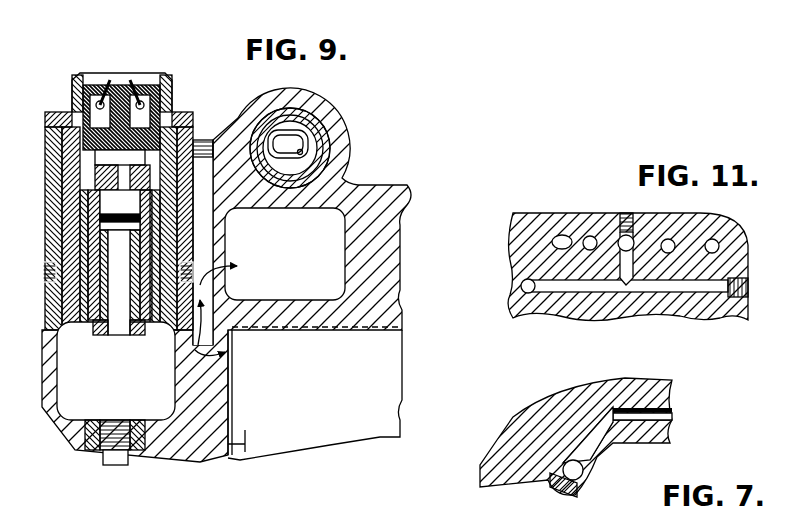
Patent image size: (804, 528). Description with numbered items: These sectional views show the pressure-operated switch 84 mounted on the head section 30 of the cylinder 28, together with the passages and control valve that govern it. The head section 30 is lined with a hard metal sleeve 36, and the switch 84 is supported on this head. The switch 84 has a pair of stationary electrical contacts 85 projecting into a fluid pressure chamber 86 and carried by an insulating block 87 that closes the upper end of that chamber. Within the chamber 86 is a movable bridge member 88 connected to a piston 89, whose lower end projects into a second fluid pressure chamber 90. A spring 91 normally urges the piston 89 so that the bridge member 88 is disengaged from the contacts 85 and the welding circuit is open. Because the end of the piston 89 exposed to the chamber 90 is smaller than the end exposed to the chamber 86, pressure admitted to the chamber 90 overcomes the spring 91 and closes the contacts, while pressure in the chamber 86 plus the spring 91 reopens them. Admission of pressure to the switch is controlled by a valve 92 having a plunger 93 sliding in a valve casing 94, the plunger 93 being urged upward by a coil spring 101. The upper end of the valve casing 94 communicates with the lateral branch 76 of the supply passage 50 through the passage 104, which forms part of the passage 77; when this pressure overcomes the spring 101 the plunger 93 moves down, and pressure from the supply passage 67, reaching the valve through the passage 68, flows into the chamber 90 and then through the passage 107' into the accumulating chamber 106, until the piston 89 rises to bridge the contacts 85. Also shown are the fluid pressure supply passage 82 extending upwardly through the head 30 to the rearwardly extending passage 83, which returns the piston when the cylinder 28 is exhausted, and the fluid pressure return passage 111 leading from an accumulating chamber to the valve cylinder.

In FIG. 9, the cylinder 28 is at (327, 396).
In FIG. 9, the head section 30 is at (190, 458).
In FIG. 9, the hard metal sleeve 36 is at (250, 442).
In FIG. 11, the fluid pressure supply passage 50 is at (641, 246).
In FIG. 11, the fluid pressure supply passage 67 is at (675, 247).
In FIG. 9, the passage 68 is at (432, 522).
In FIG. 11, the lateral branch 76 is at (620, 275).
In FIG. 11, the passage 77 is at (665, 290).
In FIG. 7, the fluid pressure supply passage 82 is at (578, 478).
In FIG. 11, the rearwardly extending passage 83 is at (716, 248).
In FIG. 7, the rearwardly extending passage 83 is at (665, 412).
In FIG. 9, the switch 84 is at (84, 68).
In FIG. 9, the stationary electrical contacts 85 is at (163, 127).
In FIG. 9, the fluid pressure chamber 86 is at (82, 185).
In FIG. 9, the insulating block 87 is at (75, 133).
In FIG. 9, the movable bridge member 88 is at (82, 215).
In FIG. 9, the piston 89 is at (100, 238).
In FIG. 9, the second fluid pressure chamber 90 is at (56, 430).
In FIG. 9, the spring 91 is at (87, 336).
In FIG. 9, the valve 92 is at (324, 108).
In FIG. 9, the plunger 93 is at (298, 122).
In FIG. 9, the valve casing 94 is at (334, 158).
In FIG. 9, the coil spring 101 is at (304, 140).
In FIG. 11, the passage 104 is at (548, 287).
In FIG. 9, the accumulating chamber 106 is at (280, 288).
In FIG. 9, the passage 107' is at (242, 269).
In FIG. 11, the fluid pressure return passage 111 is at (588, 238).